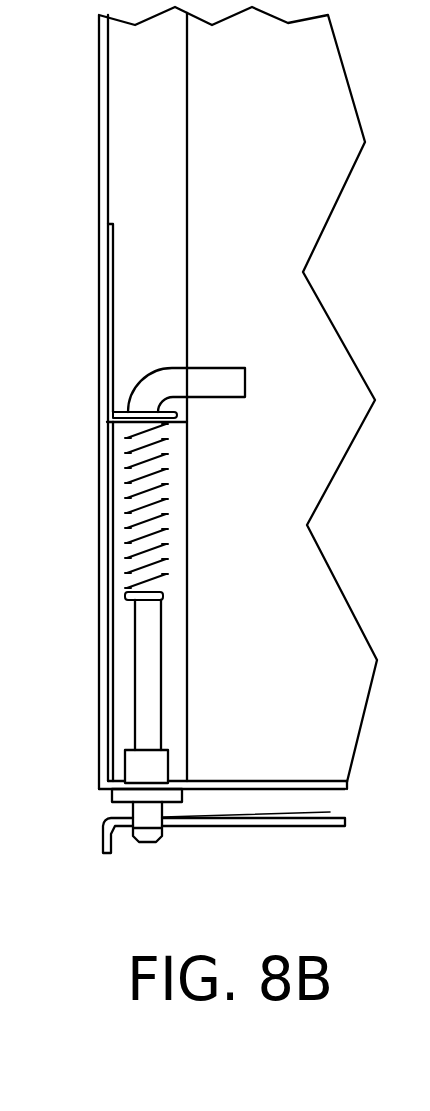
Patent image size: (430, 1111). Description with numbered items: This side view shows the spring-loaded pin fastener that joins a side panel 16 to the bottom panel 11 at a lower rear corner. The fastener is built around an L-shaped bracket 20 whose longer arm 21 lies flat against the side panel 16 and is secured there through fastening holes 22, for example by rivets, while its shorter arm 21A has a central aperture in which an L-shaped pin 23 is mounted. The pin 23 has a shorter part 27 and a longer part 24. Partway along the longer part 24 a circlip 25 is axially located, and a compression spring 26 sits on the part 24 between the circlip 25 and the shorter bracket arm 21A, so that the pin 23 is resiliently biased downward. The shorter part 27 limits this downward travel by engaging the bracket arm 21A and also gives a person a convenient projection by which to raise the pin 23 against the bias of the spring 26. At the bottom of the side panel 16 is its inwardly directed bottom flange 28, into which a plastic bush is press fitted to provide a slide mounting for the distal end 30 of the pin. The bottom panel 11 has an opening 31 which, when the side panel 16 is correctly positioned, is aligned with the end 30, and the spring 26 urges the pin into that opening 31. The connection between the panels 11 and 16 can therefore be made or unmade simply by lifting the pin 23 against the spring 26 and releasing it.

The bottom panel 11 is at (312, 823).
The side panel 16 is at (100, 455).
The L-shaped bracket 20 is at (143, 342).
The longer arm 21 is at (112, 347).
The shorter arm 21A is at (180, 422).
The fastening holes 22 is at (102, 320).
The pin 23 is at (163, 658).
The longer part 24 is at (148, 697).
The circlip 25 is at (152, 760).
The compression spring 26 is at (158, 480).
The shorter part 27 is at (223, 383).
The bottom flange 28 is at (170, 781).
The distal end 30 is at (157, 835).
The opening 31 is at (163, 815).